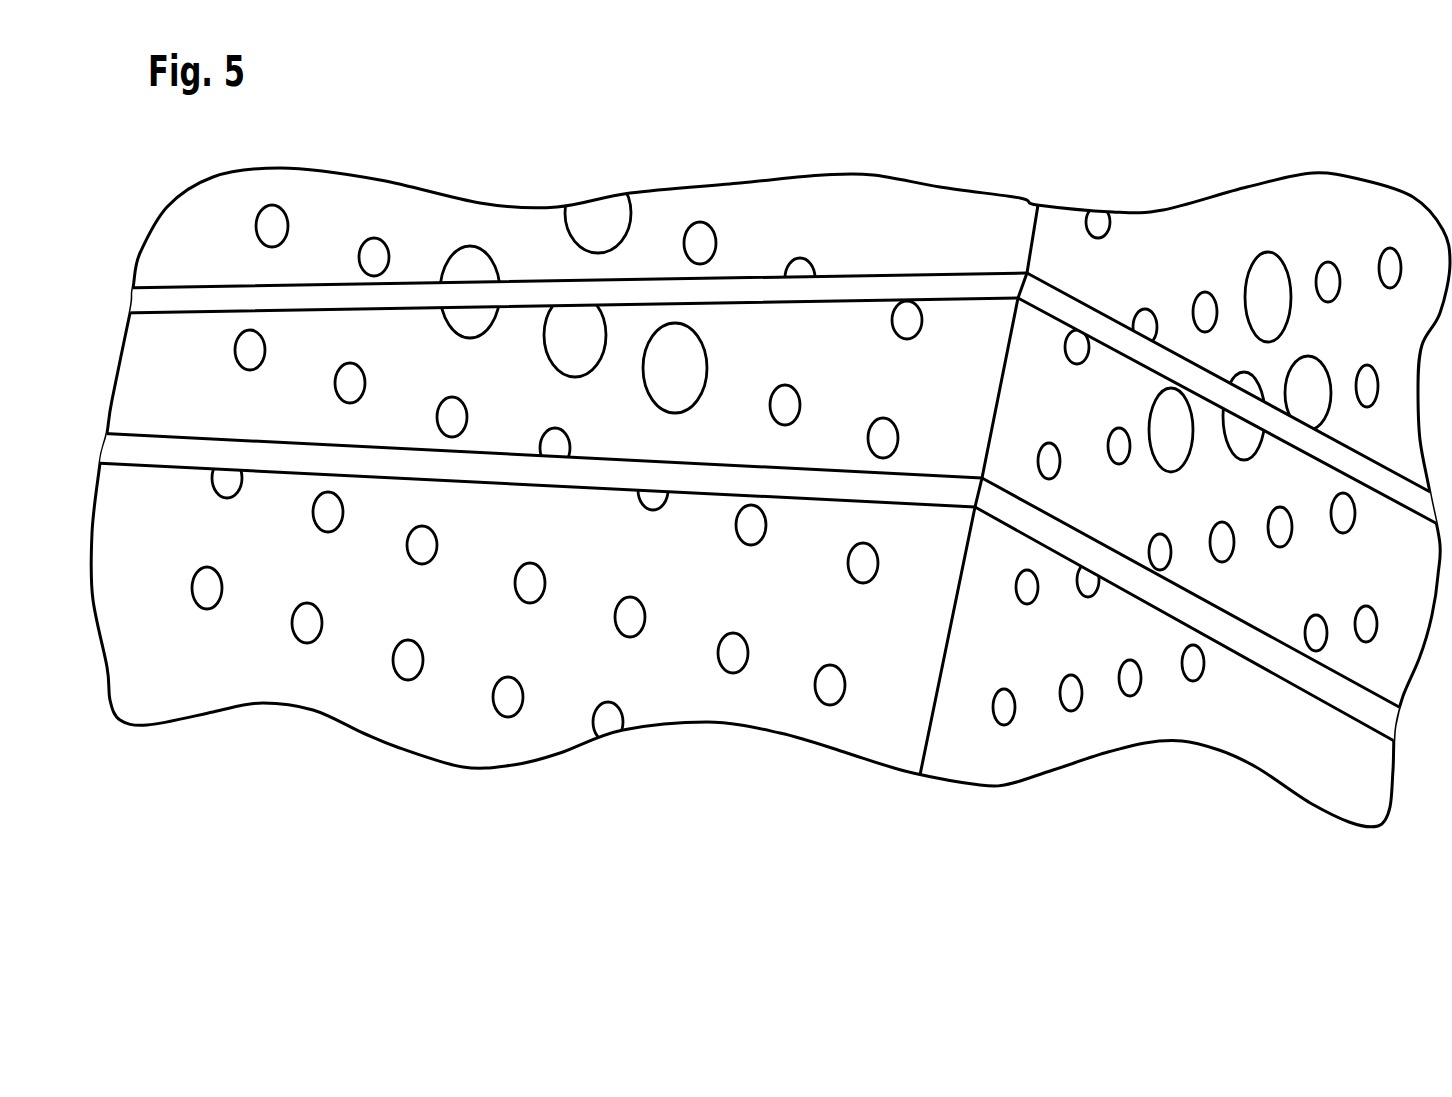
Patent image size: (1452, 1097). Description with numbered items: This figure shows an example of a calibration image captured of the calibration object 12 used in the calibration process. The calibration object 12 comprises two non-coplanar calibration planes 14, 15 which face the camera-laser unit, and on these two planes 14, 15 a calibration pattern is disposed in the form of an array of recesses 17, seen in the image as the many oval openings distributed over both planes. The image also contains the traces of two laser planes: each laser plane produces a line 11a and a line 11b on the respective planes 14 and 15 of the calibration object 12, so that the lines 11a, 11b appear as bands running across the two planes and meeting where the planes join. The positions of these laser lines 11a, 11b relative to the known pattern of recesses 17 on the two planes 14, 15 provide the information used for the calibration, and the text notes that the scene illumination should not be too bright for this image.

The calibration plane 14 is at (374, 196).
The recess 17 is at (597, 227).
The calibration object 12 is at (727, 205).
The laser line 11a is at (937, 273).
The laser line 11b is at (1062, 310).
The calibration plane 15 is at (1358, 200).